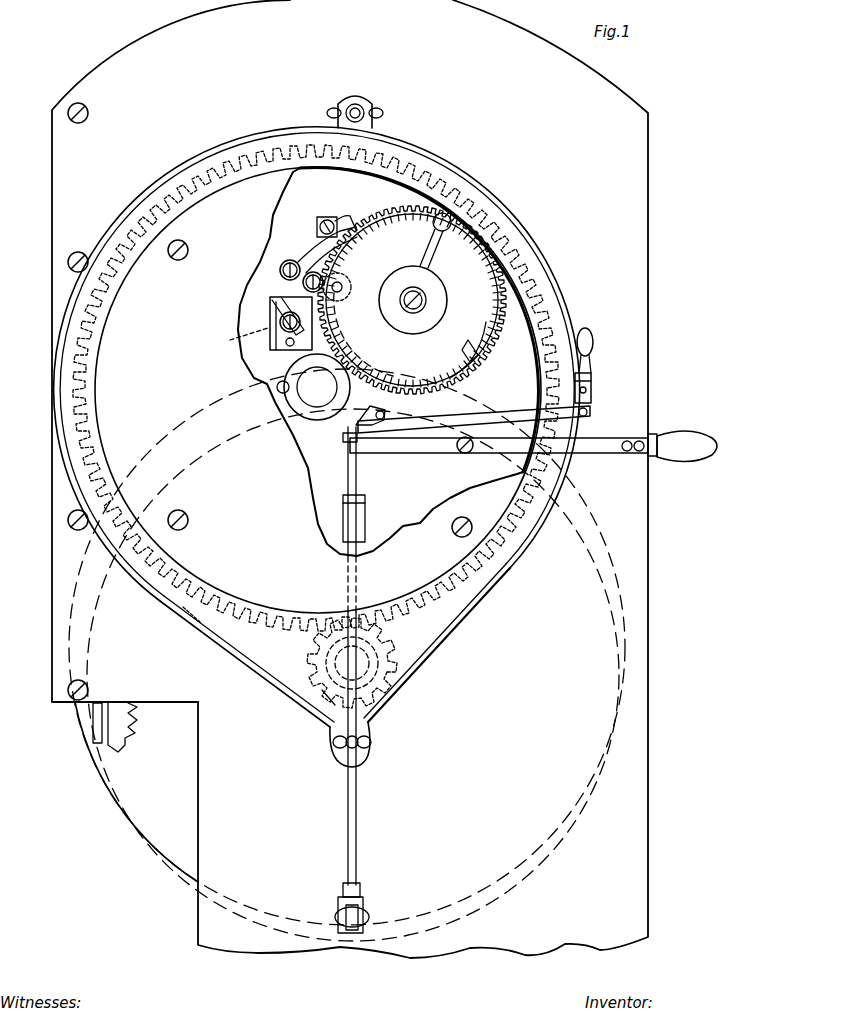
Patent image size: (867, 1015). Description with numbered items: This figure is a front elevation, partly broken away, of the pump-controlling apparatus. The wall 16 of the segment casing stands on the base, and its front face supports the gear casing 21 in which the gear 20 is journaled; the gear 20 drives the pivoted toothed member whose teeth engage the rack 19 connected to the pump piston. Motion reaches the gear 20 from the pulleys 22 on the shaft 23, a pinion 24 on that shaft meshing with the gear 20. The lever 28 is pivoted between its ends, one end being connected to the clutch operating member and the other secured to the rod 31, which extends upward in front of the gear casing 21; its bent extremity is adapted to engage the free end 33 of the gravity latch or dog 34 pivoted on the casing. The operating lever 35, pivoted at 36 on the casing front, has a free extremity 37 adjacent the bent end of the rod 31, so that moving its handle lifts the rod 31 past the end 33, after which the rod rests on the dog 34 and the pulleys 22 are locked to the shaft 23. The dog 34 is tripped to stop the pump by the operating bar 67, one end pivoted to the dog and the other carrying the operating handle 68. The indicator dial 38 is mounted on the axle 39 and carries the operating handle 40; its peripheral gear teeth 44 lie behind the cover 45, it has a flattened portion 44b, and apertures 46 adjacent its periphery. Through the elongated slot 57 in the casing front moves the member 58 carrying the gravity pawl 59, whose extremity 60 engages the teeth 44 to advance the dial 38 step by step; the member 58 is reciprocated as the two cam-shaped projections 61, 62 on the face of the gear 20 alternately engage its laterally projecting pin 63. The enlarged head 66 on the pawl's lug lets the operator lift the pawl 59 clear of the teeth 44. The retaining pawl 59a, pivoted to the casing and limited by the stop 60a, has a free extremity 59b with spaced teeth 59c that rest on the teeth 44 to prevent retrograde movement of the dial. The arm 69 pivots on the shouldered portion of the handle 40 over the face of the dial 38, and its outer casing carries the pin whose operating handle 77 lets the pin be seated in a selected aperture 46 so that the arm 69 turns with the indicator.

The wall 16 is at (350, 479).
The rack 19 is at (117, 733).
The gear 20 is at (183, 607).
The gear casing 21 is at (318, 210).
The pulleys 22 is at (173, 866).
The shaft 23 is at (383, 668).
The pinion 24 is at (320, 693).
The lever 28 is at (366, 907).
The rod 31 is at (353, 543).
The free end of the dog 33 is at (357, 430).
The latch or dog 34 is at (365, 405).
The operating lever 35 is at (607, 437).
The pivot of the operating lever 36 is at (464, 453).
The free extremity of the operating lever 37 is at (343, 442).
The indicator dial 38 is at (480, 350).
The axle 39 is at (426, 298).
The operating handle 40 is at (441, 316).
The peripheral gear teeth 44 is at (405, 217).
The flattened portion 44b is at (350, 248).
The cover or casing 45 is at (318, 390).
The apertures 46 is at (492, 323).
The elongated slot 57 is at (280, 297).
The member 58 is at (270, 326).
The pawl 59 is at (333, 327).
The retaining pawl 59a is at (320, 248).
The free extremity of the retaining pawl 59b is at (336, 220).
The spaced teeth 59c is at (351, 223).
The extremity of the pawl 60 is at (343, 247).
The stop 60a is at (318, 219).
The cam-shaped projection 61 is at (382, 334).
The cam-shaped projection 62 is at (228, 345).
The pin 63 is at (281, 372).
The enlarged head 66 is at (342, 285).
The operating bar 67 is at (500, 420).
The operating handle 68 is at (588, 352).
The arm 69 is at (423, 250).
The operating handle 77 is at (443, 237).